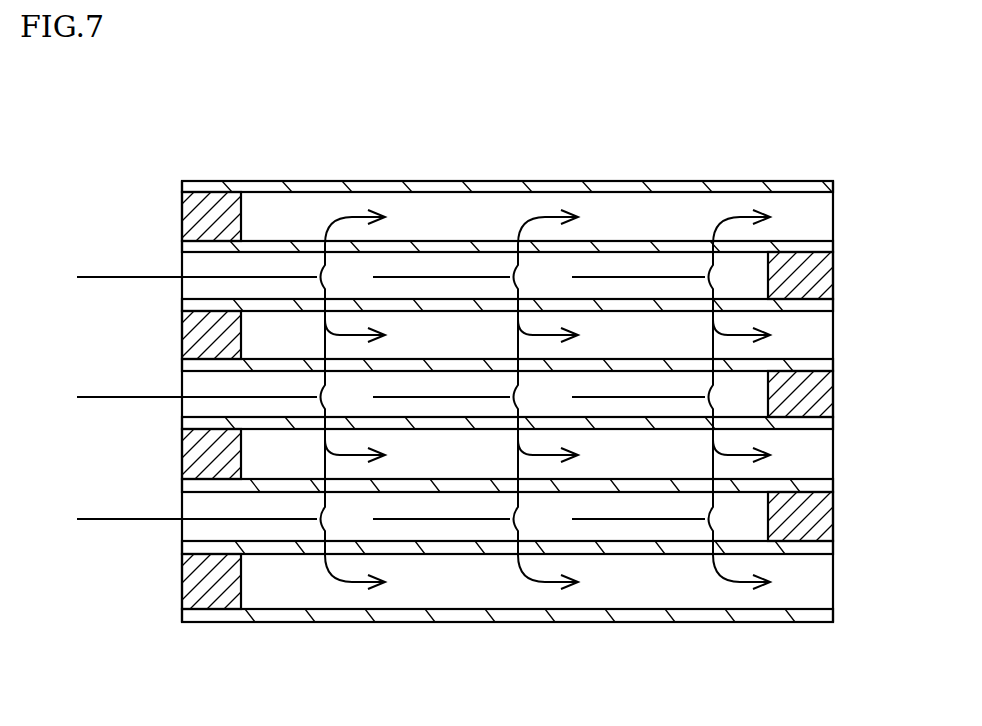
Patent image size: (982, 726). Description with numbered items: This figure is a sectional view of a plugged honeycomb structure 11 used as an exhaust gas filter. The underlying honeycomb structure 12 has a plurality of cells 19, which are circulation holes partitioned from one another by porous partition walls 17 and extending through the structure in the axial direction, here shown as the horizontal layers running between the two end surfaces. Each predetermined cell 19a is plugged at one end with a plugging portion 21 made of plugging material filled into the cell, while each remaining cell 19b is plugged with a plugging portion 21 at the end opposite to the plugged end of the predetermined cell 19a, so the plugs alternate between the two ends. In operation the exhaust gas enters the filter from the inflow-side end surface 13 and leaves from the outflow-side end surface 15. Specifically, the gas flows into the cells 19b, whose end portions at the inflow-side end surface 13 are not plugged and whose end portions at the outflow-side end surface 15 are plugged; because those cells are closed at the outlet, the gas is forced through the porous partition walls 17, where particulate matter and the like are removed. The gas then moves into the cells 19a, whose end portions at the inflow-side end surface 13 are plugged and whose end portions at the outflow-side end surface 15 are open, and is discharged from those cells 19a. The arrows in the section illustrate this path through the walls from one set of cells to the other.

The plugged honeycomb structure 11 is at (741, 97).
The honeycomb structure 12 is at (525, 615).
The inflow-side end surface 13 is at (181, 413).
The outflow-side end surface 15 is at (834, 448).
The porous partition wall 17 is at (607, 242).
The cell 19 is at (493, 106).
The predetermined cell 19a is at (423, 220).
The remaining cell 19b is at (495, 270).
The plugging portion 21 is at (192, 337).